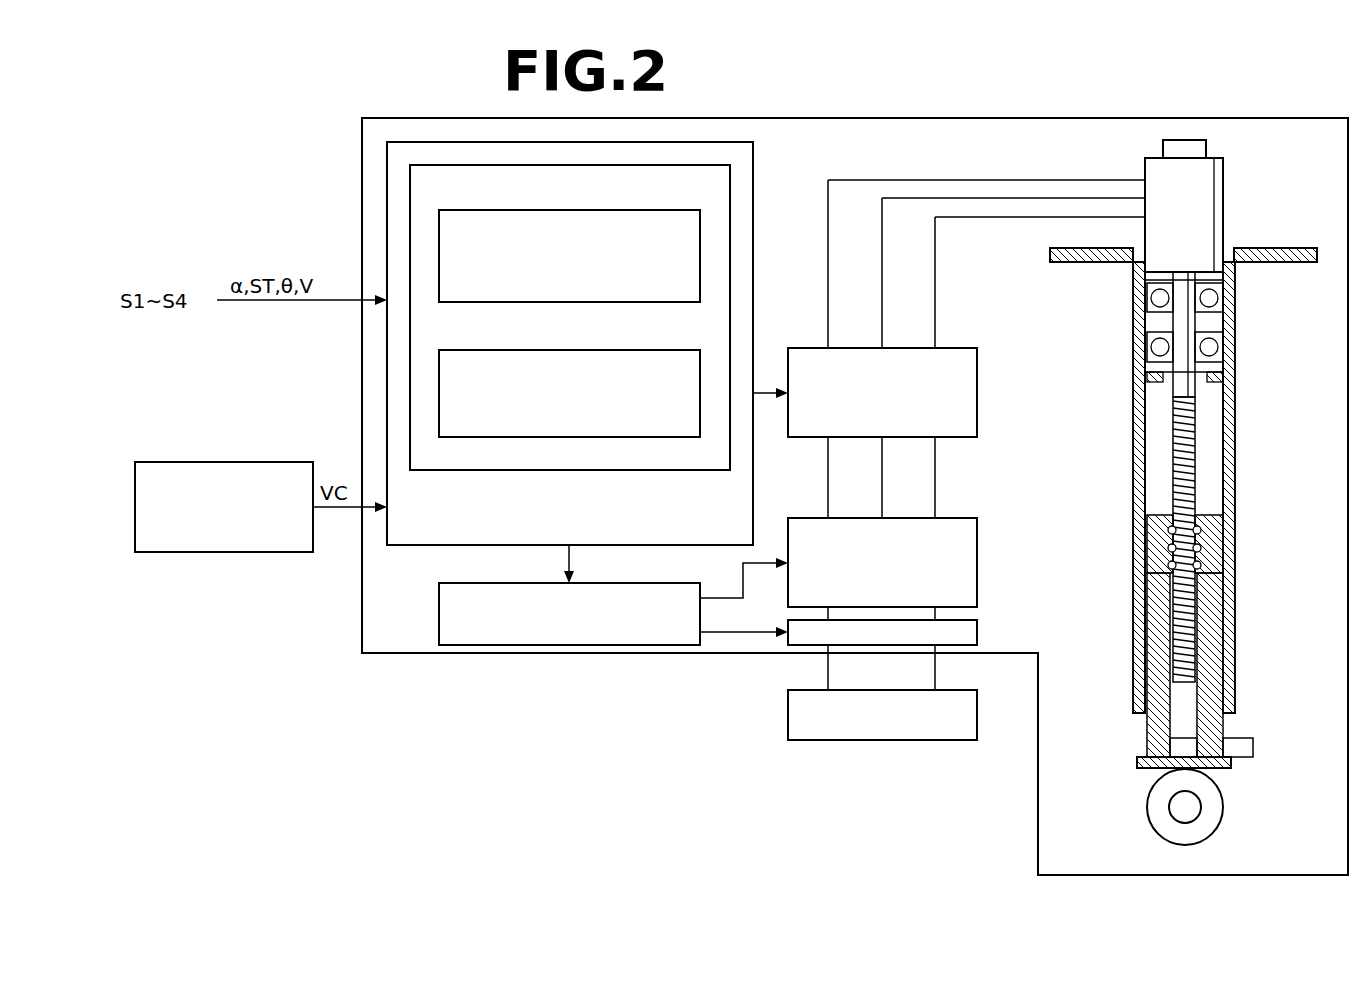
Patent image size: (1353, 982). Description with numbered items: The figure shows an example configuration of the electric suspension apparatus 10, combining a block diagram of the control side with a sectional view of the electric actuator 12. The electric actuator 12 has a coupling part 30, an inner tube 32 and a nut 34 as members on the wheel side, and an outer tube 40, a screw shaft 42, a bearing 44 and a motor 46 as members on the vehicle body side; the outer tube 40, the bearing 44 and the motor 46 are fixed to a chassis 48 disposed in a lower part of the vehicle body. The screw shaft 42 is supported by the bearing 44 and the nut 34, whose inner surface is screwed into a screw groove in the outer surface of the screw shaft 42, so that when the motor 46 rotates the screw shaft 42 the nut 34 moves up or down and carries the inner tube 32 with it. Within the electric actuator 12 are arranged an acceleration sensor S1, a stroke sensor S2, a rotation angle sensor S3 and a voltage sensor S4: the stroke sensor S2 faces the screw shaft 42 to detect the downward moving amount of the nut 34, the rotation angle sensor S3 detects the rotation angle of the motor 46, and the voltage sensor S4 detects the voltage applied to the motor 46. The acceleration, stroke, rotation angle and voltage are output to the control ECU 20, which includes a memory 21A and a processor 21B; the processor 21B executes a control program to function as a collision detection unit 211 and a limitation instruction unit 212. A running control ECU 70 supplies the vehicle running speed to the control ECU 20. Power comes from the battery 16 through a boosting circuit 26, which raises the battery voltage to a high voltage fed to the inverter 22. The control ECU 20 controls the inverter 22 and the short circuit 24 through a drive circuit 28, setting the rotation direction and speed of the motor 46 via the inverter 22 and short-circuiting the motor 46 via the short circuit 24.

The steering system / vehicle steering device 10 is at (858, 118).
The electric actuator 12 is at (1190, 445).
The battery 16 is at (788, 705).
The control ECU 20 is at (504, 342).
The memory 21A is at (387, 165).
The processor 21B is at (410, 242).
The collision detection unit 211 is at (552, 210).
The limitation instruction unit 212 is at (552, 350).
The inverter 22 is at (958, 518).
The short circuit 24 is at (958, 348).
The boosting circuit 26 is at (980, 633).
The drive circuit 28 is at (439, 625).
The coupling part 30 is at (1210, 805).
The inner tube 32 is at (1145, 752).
The nut 34 is at (1153, 532).
The outer tube 40 is at (1234, 645).
The screw shaft 42 is at (1193, 630).
The bearing 44 is at (1215, 292).
The motor 46 is at (1222, 159).
The chassis 48 is at (1290, 248).
The running control ECU 70 is at (175, 462).
The acceleration sensor S1 is at (1253, 748).
The stroke sensor S2 is at (1133, 695).
The rotation angle sensor S3 is at (1186, 102).
The voltage sensor S4 is at (1180, 148).